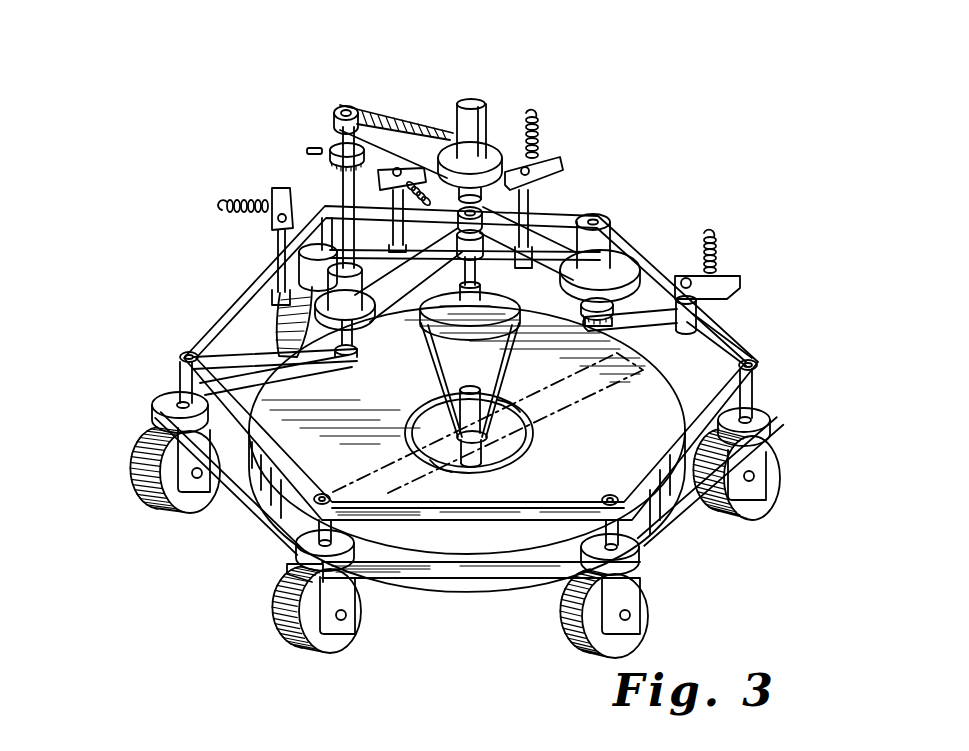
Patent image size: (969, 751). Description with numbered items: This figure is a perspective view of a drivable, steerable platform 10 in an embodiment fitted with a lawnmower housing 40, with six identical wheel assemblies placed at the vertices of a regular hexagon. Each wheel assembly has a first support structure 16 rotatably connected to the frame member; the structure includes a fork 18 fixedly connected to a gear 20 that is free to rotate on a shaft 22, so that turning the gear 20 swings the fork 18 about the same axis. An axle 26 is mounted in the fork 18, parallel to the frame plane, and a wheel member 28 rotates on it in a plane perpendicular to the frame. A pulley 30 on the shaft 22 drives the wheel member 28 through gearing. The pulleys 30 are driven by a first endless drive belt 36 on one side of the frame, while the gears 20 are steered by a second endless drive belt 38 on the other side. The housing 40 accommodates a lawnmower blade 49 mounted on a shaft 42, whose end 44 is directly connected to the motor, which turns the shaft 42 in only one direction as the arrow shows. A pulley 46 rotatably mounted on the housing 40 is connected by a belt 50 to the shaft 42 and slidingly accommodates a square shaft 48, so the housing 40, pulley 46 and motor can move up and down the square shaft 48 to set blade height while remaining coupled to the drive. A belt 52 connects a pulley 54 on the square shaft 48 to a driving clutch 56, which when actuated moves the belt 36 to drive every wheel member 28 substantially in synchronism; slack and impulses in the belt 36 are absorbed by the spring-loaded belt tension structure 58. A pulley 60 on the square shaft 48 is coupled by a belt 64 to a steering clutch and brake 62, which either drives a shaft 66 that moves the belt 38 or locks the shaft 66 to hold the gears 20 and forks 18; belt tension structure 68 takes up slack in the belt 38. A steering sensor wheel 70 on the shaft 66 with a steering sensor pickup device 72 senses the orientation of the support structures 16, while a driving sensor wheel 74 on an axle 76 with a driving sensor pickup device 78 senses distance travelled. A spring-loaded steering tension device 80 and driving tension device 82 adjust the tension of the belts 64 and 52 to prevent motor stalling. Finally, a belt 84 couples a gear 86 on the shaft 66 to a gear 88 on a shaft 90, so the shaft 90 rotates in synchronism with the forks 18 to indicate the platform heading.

The drivable, steerable platform 10 is at (636, 125).
The first support structure 16 is at (360, 607).
The fork 18 is at (357, 620).
The gear 20 is at (306, 546).
The shaft 22 is at (323, 493).
The axle 26 is at (349, 636).
The wheel member 28 is at (455, 563).
The pulley 30 is at (333, 496).
The first endless drive belt 36 is at (508, 521).
The second endless drive belt 38 is at (441, 579).
The housing 40 is at (658, 522).
The shaft 42 is at (496, 462).
The end of the shaft 44 is at (482, 378).
The pulley 46 is at (522, 347).
The square shaft 48 is at (479, 272).
The lawnmower blade 49 is at (514, 440).
The belt 50 is at (512, 392).
The belt 52 is at (548, 268).
The pulley 54 is at (452, 205).
The driving clutch 56 is at (641, 242).
The belt tension structure 58 is at (722, 298).
The pulley 60 is at (406, 312).
The steering clutch and brake 62 is at (282, 318).
The belt 64 is at (365, 320).
The shaft 66 is at (343, 192).
The belt tension structure 68 is at (272, 196).
The steering sensor wheel 70 is at (336, 142).
The steering sensor pickup device 72 is at (312, 147).
The driving sensor wheel 74 is at (584, 320).
The axle 76 is at (580, 301).
The driving sensor pickup device 78 is at (642, 336).
The steering tension device 80 is at (380, 180).
The driving tension device 82 is at (538, 200).
The belt 84 is at (372, 108).
The gear 86 is at (348, 104).
The gear 88 is at (493, 148).
The shaft 90 is at (482, 126).